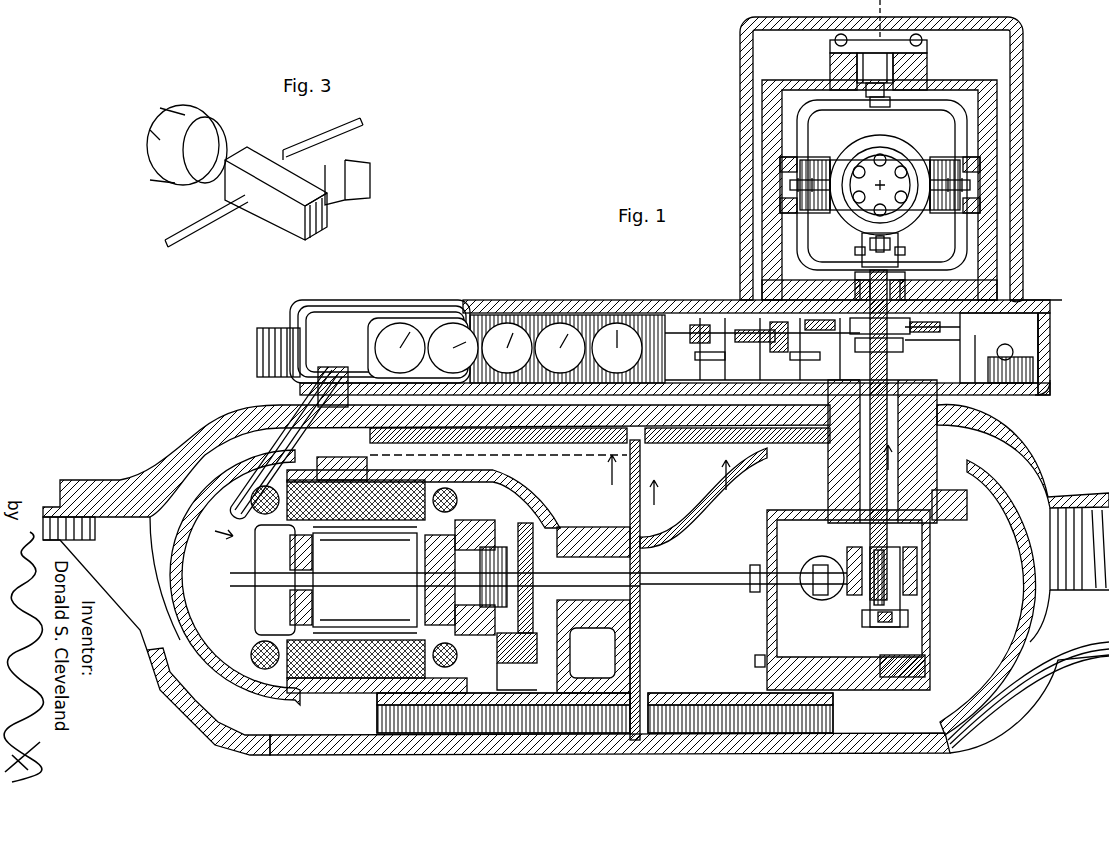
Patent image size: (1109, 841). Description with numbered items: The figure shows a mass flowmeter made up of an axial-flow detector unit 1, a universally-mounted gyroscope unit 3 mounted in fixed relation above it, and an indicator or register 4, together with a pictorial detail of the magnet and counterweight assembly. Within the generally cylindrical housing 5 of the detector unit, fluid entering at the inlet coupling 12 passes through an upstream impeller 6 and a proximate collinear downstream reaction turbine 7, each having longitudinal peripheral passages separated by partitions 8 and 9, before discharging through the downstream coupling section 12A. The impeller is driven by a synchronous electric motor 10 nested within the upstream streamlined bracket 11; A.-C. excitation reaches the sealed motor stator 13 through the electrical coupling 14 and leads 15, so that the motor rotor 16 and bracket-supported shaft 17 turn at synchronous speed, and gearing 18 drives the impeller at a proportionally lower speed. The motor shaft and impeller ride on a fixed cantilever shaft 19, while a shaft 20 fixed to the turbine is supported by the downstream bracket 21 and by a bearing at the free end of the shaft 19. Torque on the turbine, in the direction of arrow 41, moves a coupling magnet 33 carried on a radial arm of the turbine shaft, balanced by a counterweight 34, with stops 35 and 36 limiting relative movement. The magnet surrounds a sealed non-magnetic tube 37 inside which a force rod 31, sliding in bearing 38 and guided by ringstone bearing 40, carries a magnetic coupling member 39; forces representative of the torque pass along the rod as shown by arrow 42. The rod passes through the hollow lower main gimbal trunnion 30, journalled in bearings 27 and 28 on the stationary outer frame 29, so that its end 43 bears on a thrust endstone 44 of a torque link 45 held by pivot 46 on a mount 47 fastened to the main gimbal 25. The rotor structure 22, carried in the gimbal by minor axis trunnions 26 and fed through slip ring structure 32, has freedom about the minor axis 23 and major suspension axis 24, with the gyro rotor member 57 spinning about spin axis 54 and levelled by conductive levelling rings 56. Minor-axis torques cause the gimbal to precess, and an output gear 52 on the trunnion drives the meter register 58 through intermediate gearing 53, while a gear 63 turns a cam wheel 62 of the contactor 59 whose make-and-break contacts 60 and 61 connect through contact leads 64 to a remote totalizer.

In FIG. 1, the axial-flow detector unit 1 is at (225, 398).
In FIG. 1, the universally-mounted gyroscope unit 3 is at (1036, 140).
In FIG. 1, the indicator or register 4 is at (568, 292).
In FIG. 1, the housing 5 is at (780, 745).
In FIG. 1, the upstream impeller 6 is at (577, 492).
In FIG. 1, the downstream reaction turbine 7 is at (697, 492).
In FIG. 1, the partitions 8 is at (500, 712).
In FIG. 1, the partitions 9 is at (680, 715).
In FIG. 1, the synchronous electric motor 10 is at (215, 531).
In FIG. 1, the upstream streamlined bracket 11 is at (230, 500).
In FIG. 1, the inlet coupling 12 is at (76, 500).
In FIG. 1, the downstream coupling section 12A is at (1085, 500).
In FIG. 1, the motor stator 13 is at (275, 655).
In FIG. 1, the electrical coupling 14 is at (268, 333).
In FIG. 1, the leads 15 is at (272, 462).
In FIG. 1, the motor rotor 16 is at (372, 589).
In FIG. 1, the bracket-supported shaft 17 is at (278, 590).
In FIG. 1, the gearing 18 is at (494, 547).
In FIG. 1, the fixed cantilever shaft 19 is at (230, 580).
In FIG. 1, the turbine shaft 20 is at (786, 586).
In FIG. 3, the turbine shaft 20 is at (210, 210).
In FIG. 1, the downstream bracket 21 is at (1022, 490).
In FIG. 1, the rotor structure 22 is at (897, 165).
In FIG. 1, the minor axis 23 is at (790, 185).
In FIG. 1, the major suspension axis 24 is at (884, 633).
In FIG. 1, the main gimbal 25 is at (800, 140).
In FIG. 1, the minor axis trunnions 26 is at (812, 175).
In FIG. 1, the bearing 27 is at (880, 94).
In FIG. 1, the bearing 28 is at (845, 288).
In FIG. 1, the stationary outer frame 29 is at (985, 172).
In FIG. 1, the lower main gimbal trunnion 30 is at (905, 283).
In FIG. 1, the force rod 31 is at (885, 420).
In FIG. 1, the slip ring structure 32 is at (866, 66).
In FIG. 1, the coupling magnet 33 is at (848, 590).
In FIG. 1, the counterweight 34 is at (815, 565).
In FIG. 3, the counterweight 34 is at (198, 110).
In FIG. 1, the stop 35 is at (760, 665).
In FIG. 1, the stop 36 is at (775, 652).
In FIG. 1, the sealed non-magnetic tube 37 is at (872, 622).
In FIG. 1, the bearing 38 is at (905, 615).
In FIG. 1, the magnetic coupling member 39 is at (858, 550).
In FIG. 1, the ringstone bearing 40 is at (860, 345).
In FIG. 1, the arrow 41 is at (658, 500).
In FIG. 1, the arrow 42 is at (925, 462).
In FIG. 1, the force rod end 43 is at (896, 250).
In FIG. 1, the thrust endstone 44 is at (868, 243).
In FIG. 1, the torque link 45 is at (896, 240).
In FIG. 1, the pivot 46 is at (900, 258).
In FIG. 1, the mount 47 is at (860, 262).
In FIG. 1, the output gear 52 is at (882, 329).
In FIG. 1, the intermediate gearing 53 is at (728, 340).
In FIG. 1, the rotor spin axis 54 is at (882, 183).
In FIG. 1, the levelling rings 56 is at (780, 163).
In FIG. 1, the gyro rotor member 57 is at (858, 155).
In FIG. 1, the meter register 58 is at (592, 330).
In FIG. 1, the contactor 59 is at (1062, 300).
In FIG. 1, the make-and-break contact 60 is at (996, 370).
In FIG. 1, the make-and-break contact 61 is at (1008, 345).
In FIG. 1, the cam wheel 62 is at (935, 336).
In FIG. 1, the gear 63 is at (992, 299).
In FIG. 1, the contact leads 64 is at (1049, 343).